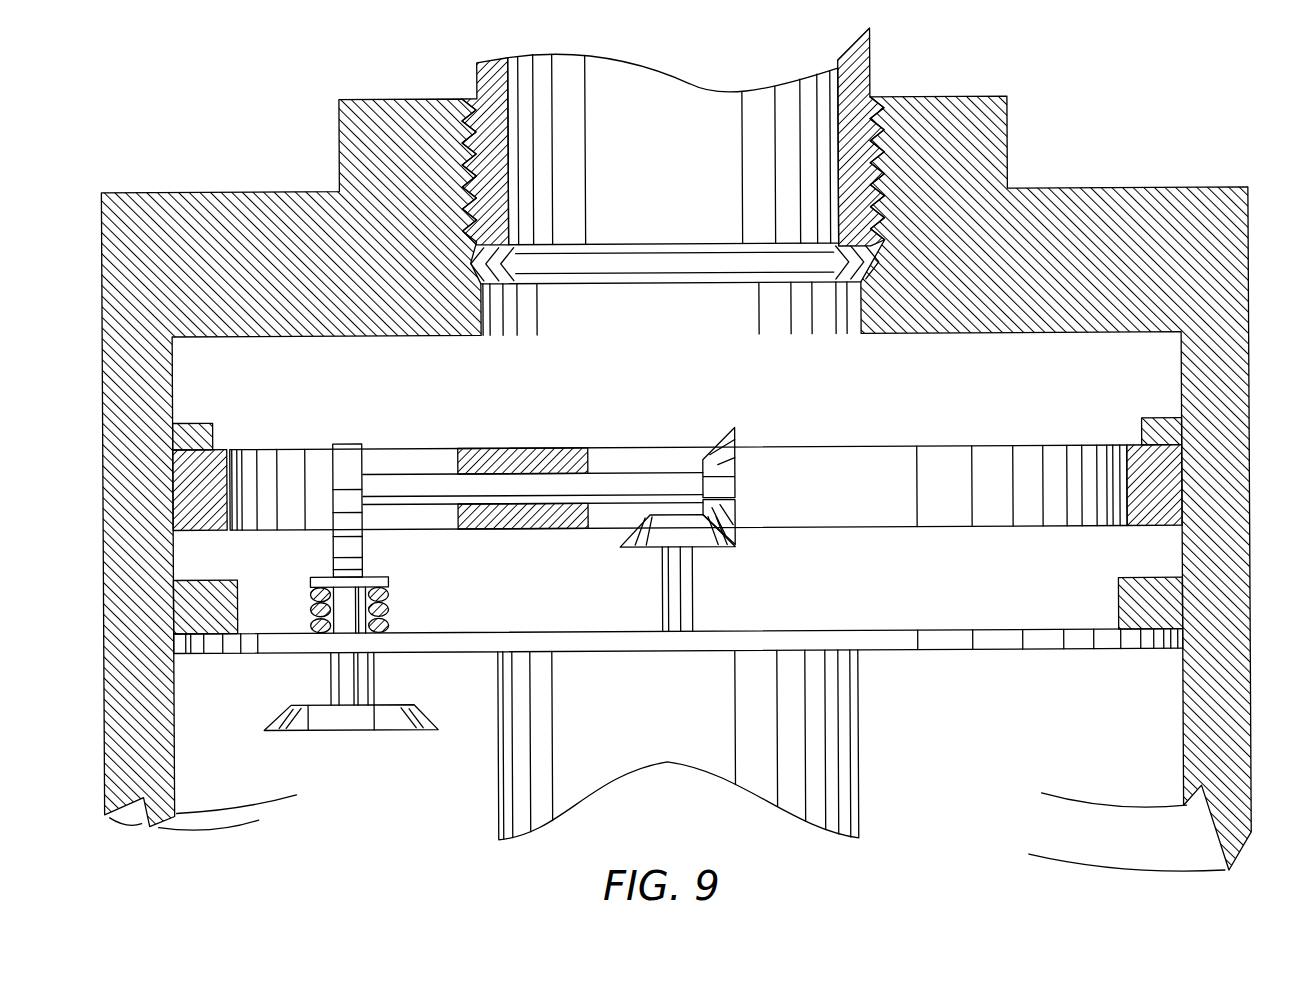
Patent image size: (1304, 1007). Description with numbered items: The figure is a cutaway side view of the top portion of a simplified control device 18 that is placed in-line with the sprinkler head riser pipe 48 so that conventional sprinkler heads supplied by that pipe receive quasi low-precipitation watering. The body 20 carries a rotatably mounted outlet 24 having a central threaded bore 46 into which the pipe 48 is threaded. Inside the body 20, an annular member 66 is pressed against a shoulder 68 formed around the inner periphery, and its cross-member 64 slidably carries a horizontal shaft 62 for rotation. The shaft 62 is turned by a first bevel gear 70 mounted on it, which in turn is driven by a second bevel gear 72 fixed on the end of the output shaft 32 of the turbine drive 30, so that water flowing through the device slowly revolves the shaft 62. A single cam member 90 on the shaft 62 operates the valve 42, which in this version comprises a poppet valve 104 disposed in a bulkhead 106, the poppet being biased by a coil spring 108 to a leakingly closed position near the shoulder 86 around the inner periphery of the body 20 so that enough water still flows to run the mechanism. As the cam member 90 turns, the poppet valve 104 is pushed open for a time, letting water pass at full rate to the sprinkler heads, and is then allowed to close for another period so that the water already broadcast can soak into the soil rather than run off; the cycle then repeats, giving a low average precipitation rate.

The control device 18 is at (1177, 120).
The body 20 is at (1106, 764).
The outlet 24 is at (985, 135).
The turbine drive 30 is at (497, 787).
The output shaft 32 is at (672, 585).
The valve 42 is at (465, 600).
The threaded bore 46 is at (514, 192).
The sprinkler head riser pipe 48 is at (479, 69).
The shaft 62 is at (480, 483).
The cross-member 64 is at (548, 448).
The annular member 66 is at (197, 528).
The shoulder 68 is at (195, 421).
The first bevel gear 70 is at (723, 502).
The second bevel gear 72 is at (650, 535).
The shoulder 86 is at (1152, 652).
The cam member 90 is at (348, 450).
The poppet valve 104 is at (387, 708).
The bulkhead 106 is at (265, 638).
The coil spring 108 is at (390, 604).